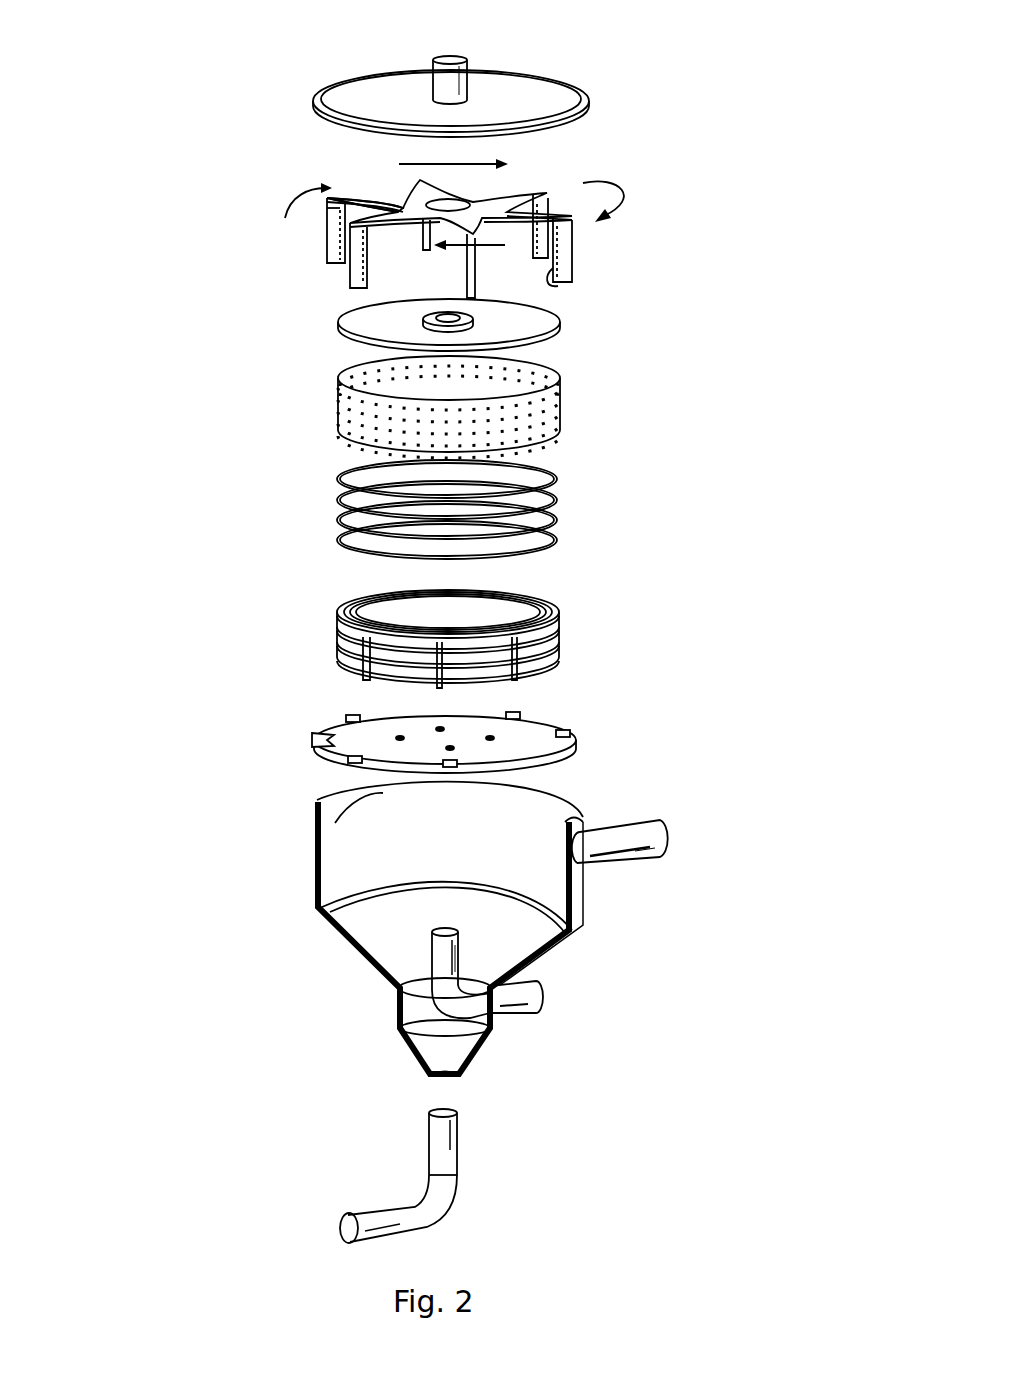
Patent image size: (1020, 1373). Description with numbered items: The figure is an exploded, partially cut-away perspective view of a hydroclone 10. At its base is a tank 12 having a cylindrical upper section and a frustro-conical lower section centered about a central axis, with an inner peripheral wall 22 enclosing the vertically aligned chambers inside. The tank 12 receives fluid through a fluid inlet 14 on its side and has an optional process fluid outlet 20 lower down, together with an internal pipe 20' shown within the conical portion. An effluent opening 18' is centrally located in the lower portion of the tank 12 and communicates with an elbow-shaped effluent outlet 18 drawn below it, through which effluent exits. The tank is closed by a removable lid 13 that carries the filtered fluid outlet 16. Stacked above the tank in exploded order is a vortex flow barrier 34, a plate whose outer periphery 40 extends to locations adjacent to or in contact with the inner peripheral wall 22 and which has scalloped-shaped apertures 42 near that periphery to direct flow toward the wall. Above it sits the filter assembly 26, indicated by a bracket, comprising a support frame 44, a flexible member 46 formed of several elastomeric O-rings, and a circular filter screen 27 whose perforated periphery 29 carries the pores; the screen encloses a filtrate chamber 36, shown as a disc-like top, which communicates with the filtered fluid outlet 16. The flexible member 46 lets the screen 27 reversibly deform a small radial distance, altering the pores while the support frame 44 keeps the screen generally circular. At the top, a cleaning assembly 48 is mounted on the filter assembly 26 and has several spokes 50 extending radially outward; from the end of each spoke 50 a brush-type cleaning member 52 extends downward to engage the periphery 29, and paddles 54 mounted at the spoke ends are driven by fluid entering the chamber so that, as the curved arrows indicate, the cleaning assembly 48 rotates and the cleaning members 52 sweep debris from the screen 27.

The hydroclone 10 is at (202, 357).
The tank 12 is at (578, 905).
The removable lid 13 is at (396, 88).
The fluid inlet 14 is at (624, 856).
The filtered fluid outlet 16 is at (468, 62).
The effluent outlet 18 is at (433, 1176).
The effluent opening 18' is at (400, 1101).
The process fluid outlet 20 is at (549, 1017).
The inner inlet tube 20' is at (564, 973).
The inner peripheral wall 22 is at (440, 786).
The filter assembly 26 is at (682, 353).
The filter screen 27 is at (548, 370).
The periphery 29 is at (347, 430).
The vortex flow barrier 34 is at (548, 732).
The filtrate chamber 36 is at (372, 380).
The outer periphery 40 is at (565, 757).
The apertures 42 is at (322, 735).
The support frame 44 is at (555, 615).
The flexible member 46 is at (557, 550).
The cleaning assembly 48 is at (480, 204).
The spoke 50 is at (378, 201).
The cleaning member 52 is at (557, 280).
The paddle 54 is at (573, 256).